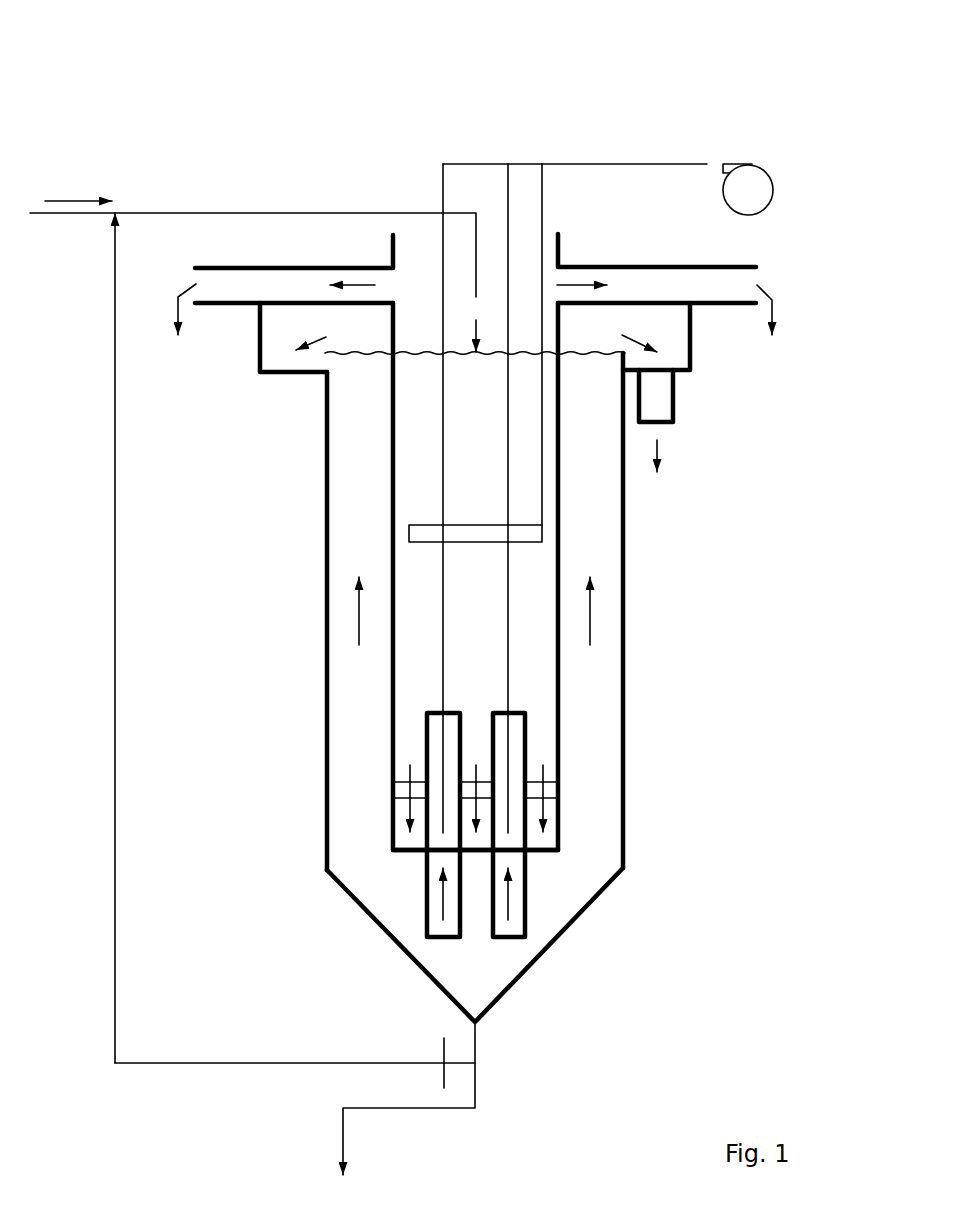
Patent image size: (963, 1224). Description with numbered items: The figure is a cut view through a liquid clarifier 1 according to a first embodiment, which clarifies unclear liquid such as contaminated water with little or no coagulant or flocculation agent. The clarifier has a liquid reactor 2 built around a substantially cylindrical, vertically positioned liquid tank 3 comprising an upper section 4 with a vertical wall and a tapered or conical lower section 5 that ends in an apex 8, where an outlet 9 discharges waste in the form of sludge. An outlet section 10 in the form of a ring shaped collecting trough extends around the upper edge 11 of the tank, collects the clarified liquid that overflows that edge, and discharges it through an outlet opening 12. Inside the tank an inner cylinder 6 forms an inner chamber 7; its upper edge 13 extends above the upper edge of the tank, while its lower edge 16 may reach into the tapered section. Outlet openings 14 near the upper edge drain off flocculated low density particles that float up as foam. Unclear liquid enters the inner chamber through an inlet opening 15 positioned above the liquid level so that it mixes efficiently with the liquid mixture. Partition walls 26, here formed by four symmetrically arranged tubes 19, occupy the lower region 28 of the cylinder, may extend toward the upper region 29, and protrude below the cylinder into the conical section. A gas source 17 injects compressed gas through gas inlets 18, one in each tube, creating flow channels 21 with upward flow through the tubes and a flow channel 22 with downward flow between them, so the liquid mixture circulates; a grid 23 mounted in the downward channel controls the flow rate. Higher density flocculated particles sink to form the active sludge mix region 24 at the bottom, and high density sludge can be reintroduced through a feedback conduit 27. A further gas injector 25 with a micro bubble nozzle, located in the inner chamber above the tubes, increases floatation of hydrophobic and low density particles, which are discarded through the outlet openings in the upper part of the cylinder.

The liquid clarifier 1 is at (605, 118).
The liquid reactor 2 is at (715, 515).
The liquid tank 3 is at (623, 757).
The upper section 4 is at (715, 550).
The lower section 5 is at (597, 935).
The inner cylinder 6 is at (560, 707).
The inner chamber 7 is at (533, 662).
The apex 8 is at (492, 1042).
The outlet 9 is at (480, 1020).
The outlet section 10 is at (715, 355).
The upper edge 11 is at (330, 350).
The outlet opening 12 is at (662, 424).
The upper edge 13 is at (393, 236).
The outlet openings 14 is at (757, 275).
The inlet opening 15 is at (476, 297).
The lower edge 16 is at (397, 853).
The gas source 17 is at (762, 185).
The gas inlets 18 is at (443, 826).
The tubes 19 is at (513, 928).
The flow channels 21 is at (515, 893).
The flow channel 22 is at (543, 753).
The grid 23 is at (550, 792).
The active sludge mix region 24 is at (783, 1042).
The gas injector 25 is at (528, 537).
The partition walls 26 is at (408, 925).
The feedback conduit 27 is at (116, 763).
The lower region 28 is at (373, 710).
The upper region 29 is at (373, 463).